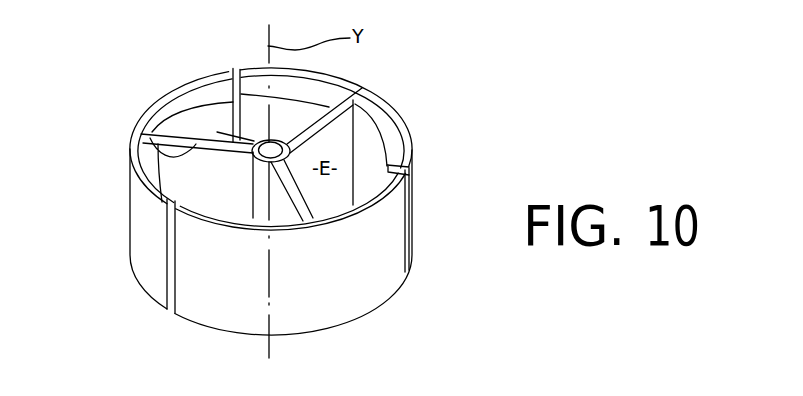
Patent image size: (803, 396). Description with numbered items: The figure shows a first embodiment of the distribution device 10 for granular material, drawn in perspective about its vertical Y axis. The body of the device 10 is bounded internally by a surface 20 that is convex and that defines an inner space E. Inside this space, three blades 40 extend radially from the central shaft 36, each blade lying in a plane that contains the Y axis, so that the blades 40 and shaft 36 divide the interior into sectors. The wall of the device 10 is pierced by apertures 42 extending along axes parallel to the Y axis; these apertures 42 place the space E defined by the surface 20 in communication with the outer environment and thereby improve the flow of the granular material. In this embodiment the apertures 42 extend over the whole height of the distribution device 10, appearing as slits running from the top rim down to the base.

The device 10 is at (445, 184).
The surface 20 is at (383, 133).
The shaft 36 is at (217, 132).
The blades 40 is at (150, 141).
The apertures 42 is at (233, 68).